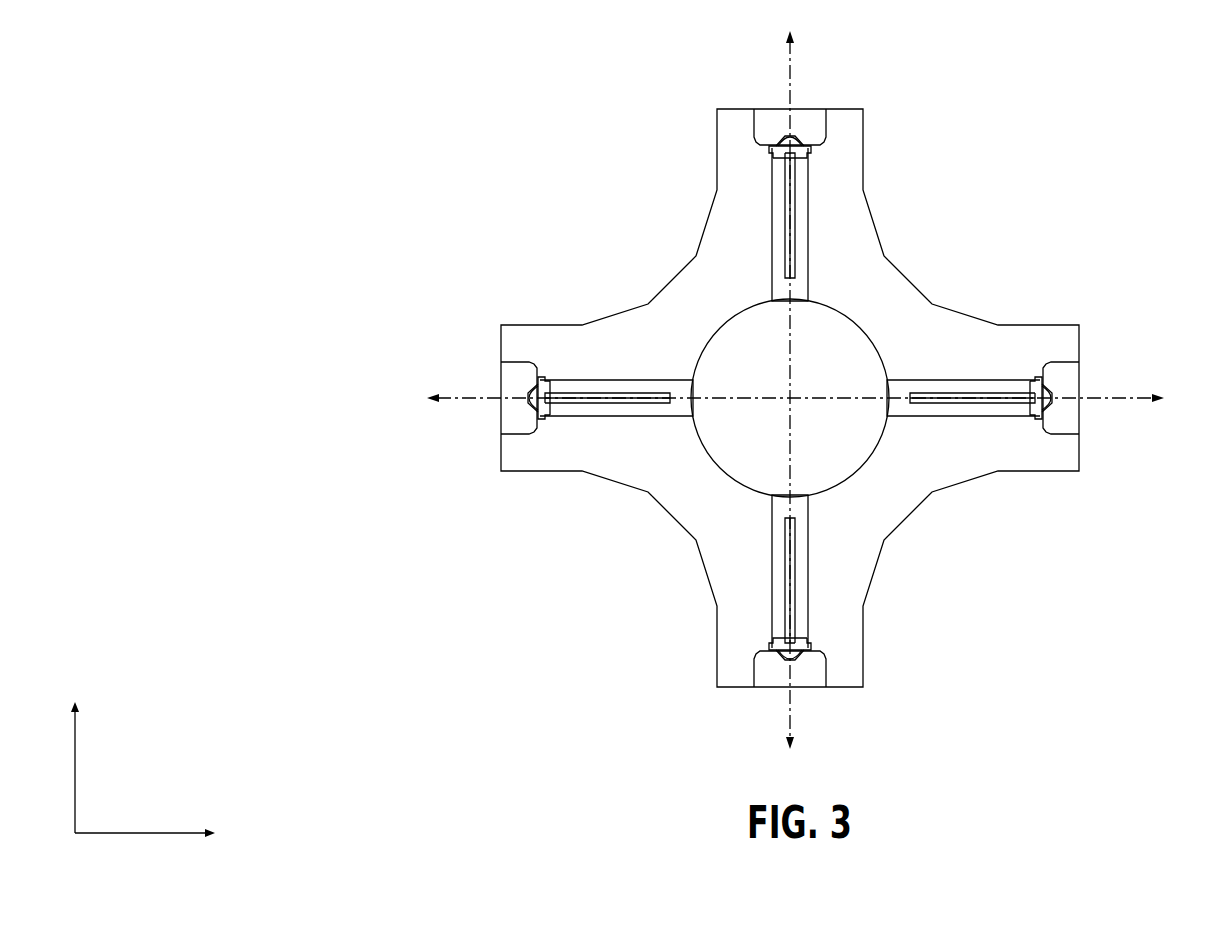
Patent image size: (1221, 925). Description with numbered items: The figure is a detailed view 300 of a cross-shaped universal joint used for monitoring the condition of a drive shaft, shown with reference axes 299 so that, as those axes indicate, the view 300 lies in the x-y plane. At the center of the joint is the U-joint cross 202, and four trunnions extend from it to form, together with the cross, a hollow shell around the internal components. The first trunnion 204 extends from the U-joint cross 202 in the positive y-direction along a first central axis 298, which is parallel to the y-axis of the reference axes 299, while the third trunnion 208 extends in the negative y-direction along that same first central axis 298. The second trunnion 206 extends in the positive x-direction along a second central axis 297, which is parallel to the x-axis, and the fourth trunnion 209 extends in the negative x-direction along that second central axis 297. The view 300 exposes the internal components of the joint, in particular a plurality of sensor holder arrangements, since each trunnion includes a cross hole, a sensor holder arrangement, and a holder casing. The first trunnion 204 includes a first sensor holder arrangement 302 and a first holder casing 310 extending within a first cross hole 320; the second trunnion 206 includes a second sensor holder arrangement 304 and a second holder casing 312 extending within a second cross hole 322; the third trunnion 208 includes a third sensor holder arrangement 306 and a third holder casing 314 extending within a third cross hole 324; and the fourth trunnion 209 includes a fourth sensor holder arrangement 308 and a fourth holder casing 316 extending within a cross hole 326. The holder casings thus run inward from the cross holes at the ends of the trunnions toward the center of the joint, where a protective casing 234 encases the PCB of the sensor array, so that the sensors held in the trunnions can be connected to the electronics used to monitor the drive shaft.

The U-joint cross 202 is at (910, 282).
The first trunnion 204 is at (863, 132).
The second trunnion 206 is at (1012, 473).
The third trunnion 208 is at (864, 640).
The fourth trunnion 209 is at (510, 473).
The protective casing 234 is at (882, 343).
The second central axis 297 is at (1106, 395).
The first central axis 298 is at (791, 82).
The reference axes 299 is at (170, 737).
The detailed view 300 is at (1037, 132).
The first sensor holder arrangement 302 is at (808, 125).
The second sensor holder arrangement 304 is at (1060, 406).
The third sensor holder arrangement 306 is at (810, 665).
The fourth sensor holder arrangement 308 is at (517, 404).
The first holder casing 310 is at (810, 213).
The second holder casing 312 is at (942, 380).
The third holder casing 314 is at (810, 563).
The fourth holder casing 316 is at (645, 380).
The first cross hole 320 is at (754, 128).
The second cross hole 322 is at (1062, 362).
The third cross hole 324 is at (754, 660).
The cross hole 326 is at (522, 362).